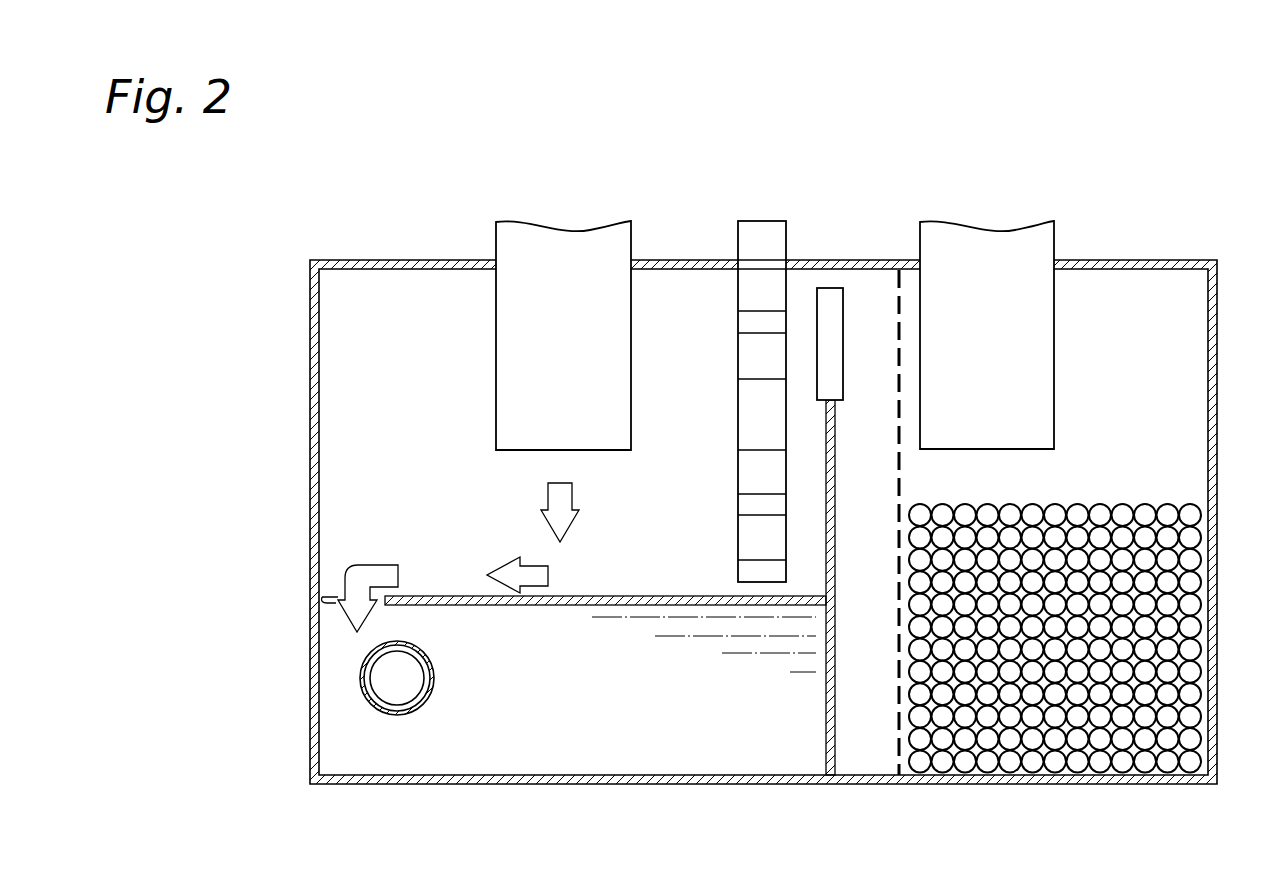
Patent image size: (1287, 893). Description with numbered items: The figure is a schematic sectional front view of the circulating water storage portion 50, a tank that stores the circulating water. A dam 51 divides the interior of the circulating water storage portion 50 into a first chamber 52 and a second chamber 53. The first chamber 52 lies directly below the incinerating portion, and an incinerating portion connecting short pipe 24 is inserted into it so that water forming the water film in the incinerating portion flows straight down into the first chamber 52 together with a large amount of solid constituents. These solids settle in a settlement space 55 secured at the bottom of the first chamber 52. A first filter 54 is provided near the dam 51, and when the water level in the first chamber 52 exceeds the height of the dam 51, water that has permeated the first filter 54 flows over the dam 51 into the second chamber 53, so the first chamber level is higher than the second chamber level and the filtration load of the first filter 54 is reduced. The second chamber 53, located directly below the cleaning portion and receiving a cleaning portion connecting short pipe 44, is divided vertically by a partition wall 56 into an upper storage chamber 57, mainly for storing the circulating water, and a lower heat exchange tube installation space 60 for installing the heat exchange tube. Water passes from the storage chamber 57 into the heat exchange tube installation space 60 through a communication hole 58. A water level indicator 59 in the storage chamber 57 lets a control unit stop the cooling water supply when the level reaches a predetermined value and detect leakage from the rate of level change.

The incinerating portion connecting short pipe 24 is at (1054, 312).
The cleaning portion connecting short pipe 44 is at (631, 325).
The circulating water storage portion 50 is at (1168, 259).
The dam 51 is at (835, 712).
The first chamber 52 is at (1132, 310).
The second chamber 53 is at (414, 298).
The first filter 54 is at (899, 328).
The settlement space 55 is at (1177, 492).
The partition wall 56 is at (655, 596).
The storage chamber 57 is at (333, 410).
The communication hole 58 is at (338, 585).
The water level indicator 59 is at (757, 221).
The heat exchange tube installation space 60 is at (333, 733).